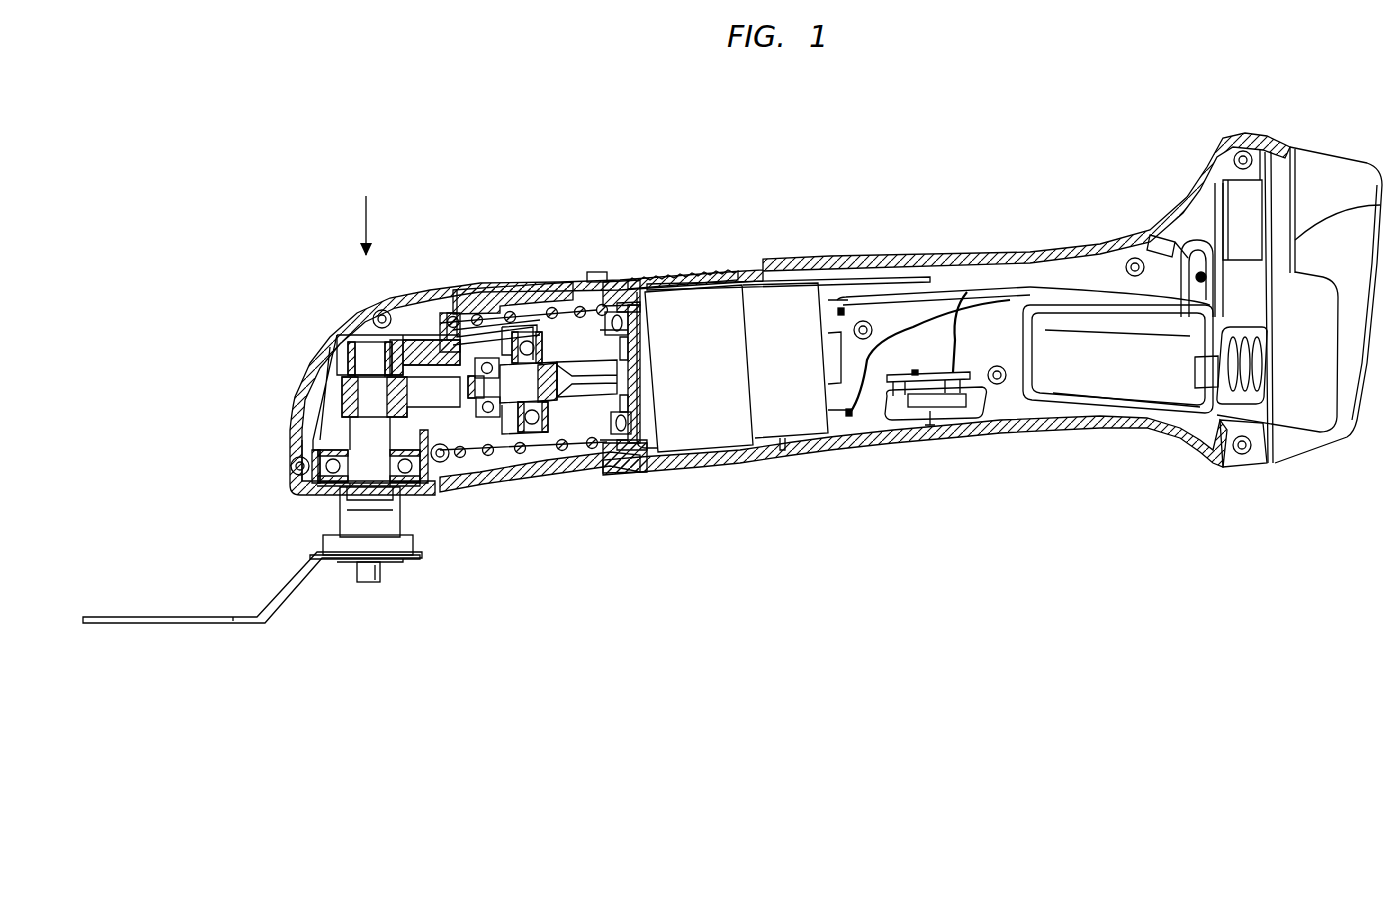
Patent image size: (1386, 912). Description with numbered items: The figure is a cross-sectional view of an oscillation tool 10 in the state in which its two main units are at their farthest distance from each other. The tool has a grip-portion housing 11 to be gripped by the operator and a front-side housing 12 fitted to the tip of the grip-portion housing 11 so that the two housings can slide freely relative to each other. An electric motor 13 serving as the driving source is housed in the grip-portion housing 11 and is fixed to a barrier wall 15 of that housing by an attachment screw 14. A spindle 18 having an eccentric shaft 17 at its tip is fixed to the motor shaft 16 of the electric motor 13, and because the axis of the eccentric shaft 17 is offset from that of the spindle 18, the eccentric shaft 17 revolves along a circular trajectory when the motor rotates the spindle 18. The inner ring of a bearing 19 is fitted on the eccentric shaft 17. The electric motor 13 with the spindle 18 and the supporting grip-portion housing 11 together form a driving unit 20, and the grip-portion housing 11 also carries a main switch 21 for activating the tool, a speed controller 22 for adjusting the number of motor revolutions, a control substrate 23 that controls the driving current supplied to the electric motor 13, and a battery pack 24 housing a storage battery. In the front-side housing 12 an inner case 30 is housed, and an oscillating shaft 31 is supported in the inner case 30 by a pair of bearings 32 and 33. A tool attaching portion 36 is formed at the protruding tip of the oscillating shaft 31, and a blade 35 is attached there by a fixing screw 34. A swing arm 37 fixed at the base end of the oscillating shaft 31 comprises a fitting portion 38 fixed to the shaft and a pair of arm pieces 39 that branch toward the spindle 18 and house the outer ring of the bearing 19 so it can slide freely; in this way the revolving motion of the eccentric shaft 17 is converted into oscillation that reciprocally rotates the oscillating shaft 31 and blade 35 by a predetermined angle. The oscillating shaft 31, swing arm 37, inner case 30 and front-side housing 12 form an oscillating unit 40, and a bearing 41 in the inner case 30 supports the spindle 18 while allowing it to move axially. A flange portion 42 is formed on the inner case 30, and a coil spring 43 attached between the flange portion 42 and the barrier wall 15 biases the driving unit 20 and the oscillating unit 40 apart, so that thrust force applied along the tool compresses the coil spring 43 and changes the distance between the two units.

The oscillation tool 10 is at (305, 163).
The grip-portion housing 11 is at (928, 257).
The front-side housing 12 is at (335, 313).
The electric motor 13 is at (725, 412).
The attachment screw 14 is at (618, 467).
The barrier wall 15 is at (632, 463).
The motor shaft 16 is at (587, 377).
The eccentric shaft 17 is at (490, 458).
The spindle 18 is at (553, 378).
The bearing 19 is at (485, 373).
The driving unit 20 is at (830, 258).
The main switch 21 is at (673, 267).
The speed controller 22 is at (937, 403).
The control substrate 23 is at (1217, 212).
The battery pack 24 is at (1295, 420).
The inner case 30 is at (325, 408).
The oscillating shaft 31 is at (348, 502).
The bearing 32 is at (345, 360).
The bearing 33 is at (333, 465).
The fixing screw 34 is at (380, 578).
The blade 35 is at (182, 620).
The tool attaching portion 36 is at (413, 545).
The swing arm 37 is at (460, 228).
The fitting portion 38 is at (395, 375).
The arm pieces 39 is at (430, 375).
The oscillating unit 40 is at (307, 347).
The bearing 41 is at (527, 347).
The flange portion 42 is at (458, 462).
The coil spring 43 is at (565, 462).